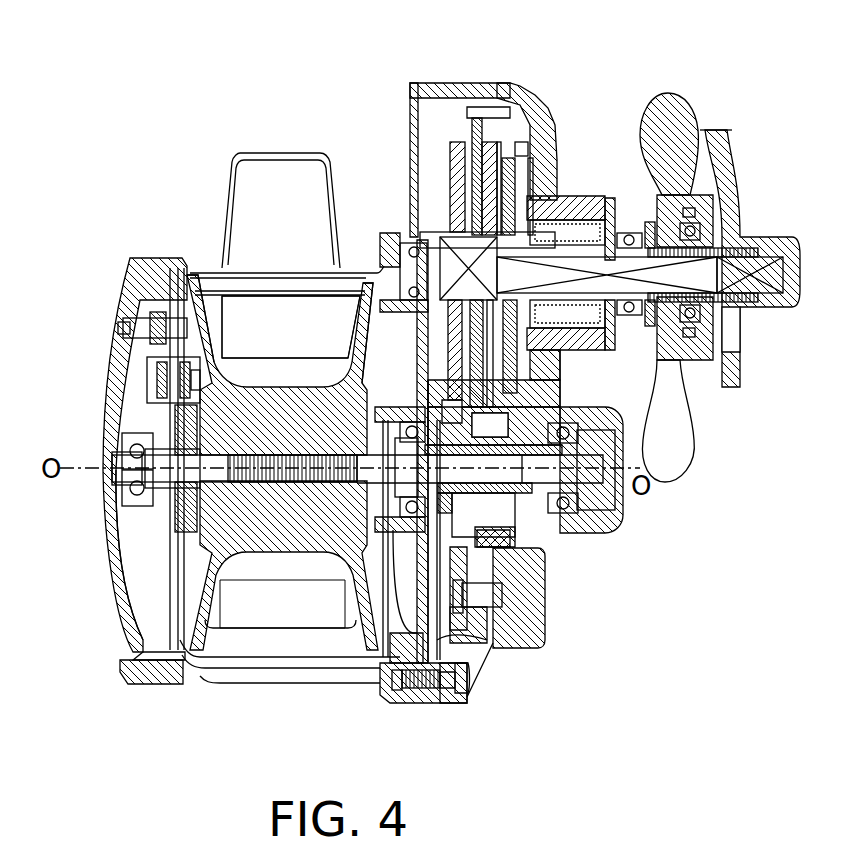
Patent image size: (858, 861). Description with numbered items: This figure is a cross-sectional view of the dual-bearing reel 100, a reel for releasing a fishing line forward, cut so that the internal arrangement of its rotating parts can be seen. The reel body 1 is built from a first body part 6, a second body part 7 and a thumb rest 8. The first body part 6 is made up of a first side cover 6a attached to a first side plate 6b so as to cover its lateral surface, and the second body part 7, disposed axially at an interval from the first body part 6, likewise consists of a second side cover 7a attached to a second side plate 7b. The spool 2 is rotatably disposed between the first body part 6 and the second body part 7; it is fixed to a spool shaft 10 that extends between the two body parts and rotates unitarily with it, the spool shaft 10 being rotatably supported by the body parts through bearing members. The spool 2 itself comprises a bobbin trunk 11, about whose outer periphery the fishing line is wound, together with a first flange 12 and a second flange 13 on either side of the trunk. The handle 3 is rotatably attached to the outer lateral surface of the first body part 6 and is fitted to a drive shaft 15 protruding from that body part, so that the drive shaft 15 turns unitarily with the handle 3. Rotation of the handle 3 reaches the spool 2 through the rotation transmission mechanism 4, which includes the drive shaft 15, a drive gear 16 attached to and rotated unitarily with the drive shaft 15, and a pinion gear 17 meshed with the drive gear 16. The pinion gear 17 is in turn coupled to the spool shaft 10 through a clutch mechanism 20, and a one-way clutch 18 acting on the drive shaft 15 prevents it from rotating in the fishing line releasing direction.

The dual-bearing reel 100 is at (130, 182).
The reel body 1 is at (503, 688).
The spool 2 is at (283, 553).
The handle 3 is at (735, 167).
The rotation transmission mechanism 4 is at (464, 100).
The first body part 6 is at (422, 712).
The first side cover 6a is at (450, 702).
The first side plate 6b is at (394, 692).
The second body part 7 is at (150, 690).
The second side cover 7a is at (118, 640).
The second side plate 7b is at (167, 682).
The thumb rest 8 is at (279, 288).
The spool shaft 10 is at (217, 483).
The bobbin trunk 11 is at (292, 380).
The first flange 12 is at (353, 302).
The second flange 13 is at (213, 298).
The drive shaft 15 is at (614, 255).
The drive gear 16 is at (499, 112).
The pinion gear 17 is at (499, 507).
The one-way clutch 18 is at (568, 232).
The clutch mechanism 20 is at (390, 505).